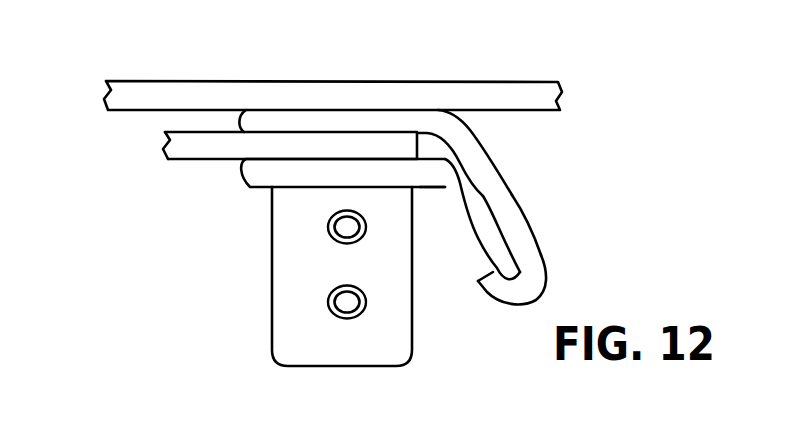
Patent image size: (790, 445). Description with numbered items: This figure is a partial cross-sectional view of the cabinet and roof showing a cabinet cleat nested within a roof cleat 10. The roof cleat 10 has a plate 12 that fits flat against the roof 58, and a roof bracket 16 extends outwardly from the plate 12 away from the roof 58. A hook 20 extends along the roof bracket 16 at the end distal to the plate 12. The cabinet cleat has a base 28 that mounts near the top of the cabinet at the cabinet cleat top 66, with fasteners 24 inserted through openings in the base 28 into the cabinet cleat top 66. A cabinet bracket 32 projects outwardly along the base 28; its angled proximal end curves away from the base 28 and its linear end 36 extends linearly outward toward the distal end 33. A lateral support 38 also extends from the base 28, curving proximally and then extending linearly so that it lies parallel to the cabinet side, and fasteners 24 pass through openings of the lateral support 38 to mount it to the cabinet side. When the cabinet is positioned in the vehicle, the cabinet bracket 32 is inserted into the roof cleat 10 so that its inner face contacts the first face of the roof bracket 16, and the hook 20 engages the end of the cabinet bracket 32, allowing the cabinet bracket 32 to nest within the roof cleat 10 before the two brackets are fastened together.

The roof 58 is at (203, 92).
The roof cleat 10 is at (280, 117).
The cabinet cleat top 66 is at (177, 132).
The plate 12 is at (393, 120).
The roof bracket 16 is at (495, 189).
The cabinet bracket 32 is at (495, 233).
The linear end 36 is at (546, 308).
The hook 20 is at (482, 282).
The base 28 is at (263, 169).
The distal end 33 is at (446, 188).
The lateral support 38 is at (292, 292).
The fastener 24 is at (343, 305).